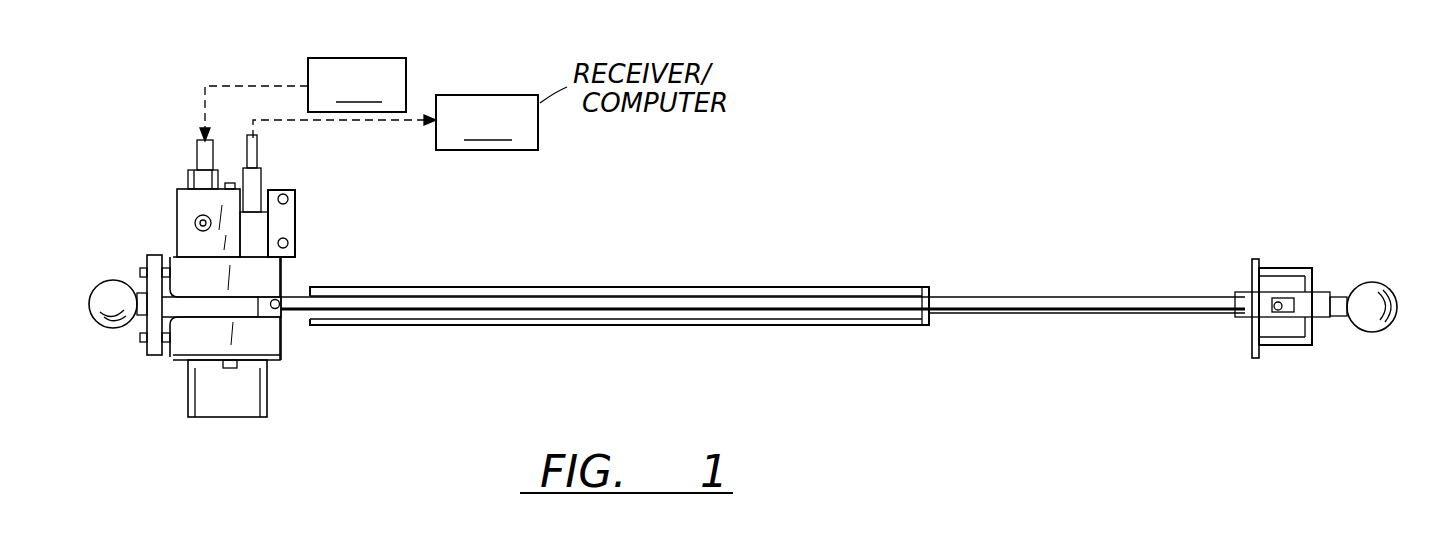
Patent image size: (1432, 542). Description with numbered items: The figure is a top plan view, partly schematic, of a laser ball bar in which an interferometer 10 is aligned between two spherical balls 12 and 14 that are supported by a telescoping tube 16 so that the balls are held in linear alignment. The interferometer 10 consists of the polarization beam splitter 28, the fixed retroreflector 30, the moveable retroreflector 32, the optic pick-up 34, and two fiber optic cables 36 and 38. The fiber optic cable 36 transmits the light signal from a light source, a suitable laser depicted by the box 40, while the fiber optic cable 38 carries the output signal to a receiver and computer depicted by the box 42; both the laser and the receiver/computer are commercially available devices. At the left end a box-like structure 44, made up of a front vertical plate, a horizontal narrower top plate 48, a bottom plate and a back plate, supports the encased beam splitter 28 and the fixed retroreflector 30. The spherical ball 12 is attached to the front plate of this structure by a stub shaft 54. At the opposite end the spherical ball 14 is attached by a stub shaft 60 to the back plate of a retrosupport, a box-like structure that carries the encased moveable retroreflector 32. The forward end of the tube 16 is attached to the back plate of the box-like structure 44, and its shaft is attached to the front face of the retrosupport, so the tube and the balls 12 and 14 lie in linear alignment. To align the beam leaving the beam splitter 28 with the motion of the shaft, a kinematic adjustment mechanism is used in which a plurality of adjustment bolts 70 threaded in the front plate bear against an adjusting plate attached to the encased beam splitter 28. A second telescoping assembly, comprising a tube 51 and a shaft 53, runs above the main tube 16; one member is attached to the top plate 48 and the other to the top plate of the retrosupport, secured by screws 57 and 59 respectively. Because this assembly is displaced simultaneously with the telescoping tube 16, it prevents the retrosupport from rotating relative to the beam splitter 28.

The interferometer 10 is at (797, 231).
The spherical ball 12 is at (100, 325).
The spherical ball 14 is at (1390, 328).
The telescoping tube 16 is at (554, 325).
The polarization beam splitter 28 is at (282, 269).
The fixed retroreflector 30 is at (258, 393).
The moveable retroreflector 32 is at (1290, 345).
The optic pick-up 34 is at (297, 222).
The fiber optic cable 36 is at (197, 156).
The fiber optic cable 38 is at (258, 152).
The laser 40 is at (303, 99).
The receiver and computer 42 is at (395, 122).
The box-like structure 44 is at (213, 316).
The top plate 48 is at (245, 325).
The tube 51 is at (838, 320).
The shaft 53 is at (1025, 297).
The stub shaft 54 is at (142, 290).
The screw 57 is at (285, 300).
The screw 59 is at (1280, 302).
The stub shaft 60 is at (1340, 318).
The adjustment bolts 70 is at (142, 268).